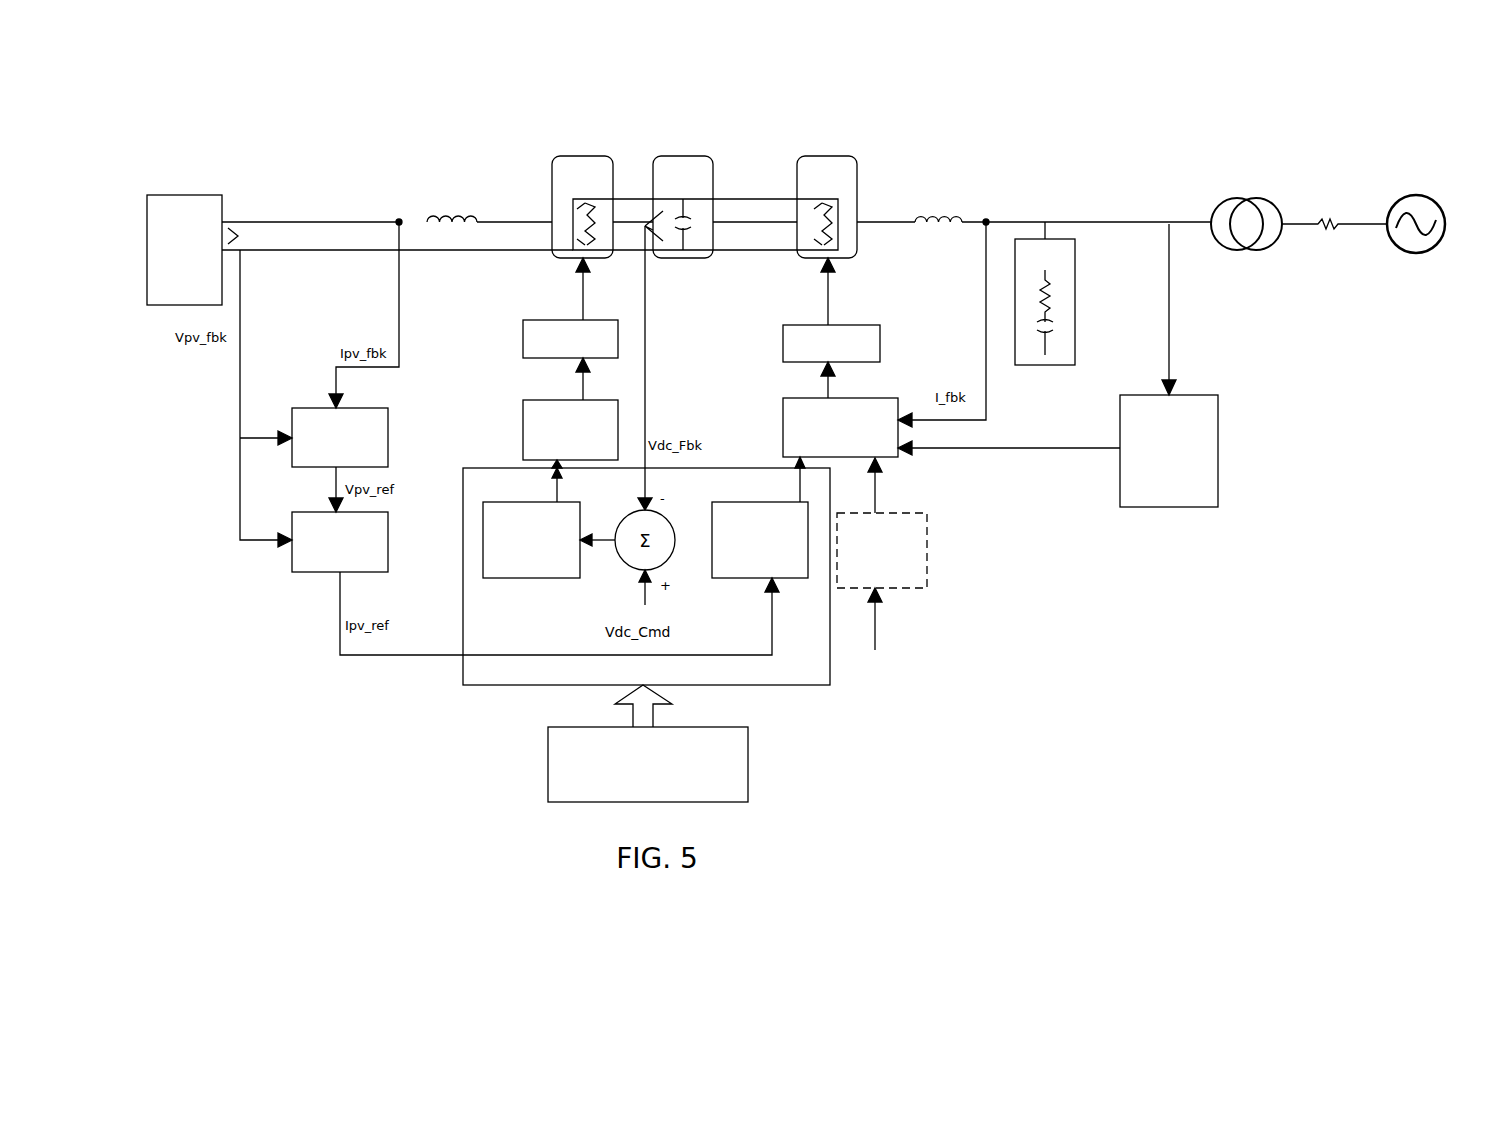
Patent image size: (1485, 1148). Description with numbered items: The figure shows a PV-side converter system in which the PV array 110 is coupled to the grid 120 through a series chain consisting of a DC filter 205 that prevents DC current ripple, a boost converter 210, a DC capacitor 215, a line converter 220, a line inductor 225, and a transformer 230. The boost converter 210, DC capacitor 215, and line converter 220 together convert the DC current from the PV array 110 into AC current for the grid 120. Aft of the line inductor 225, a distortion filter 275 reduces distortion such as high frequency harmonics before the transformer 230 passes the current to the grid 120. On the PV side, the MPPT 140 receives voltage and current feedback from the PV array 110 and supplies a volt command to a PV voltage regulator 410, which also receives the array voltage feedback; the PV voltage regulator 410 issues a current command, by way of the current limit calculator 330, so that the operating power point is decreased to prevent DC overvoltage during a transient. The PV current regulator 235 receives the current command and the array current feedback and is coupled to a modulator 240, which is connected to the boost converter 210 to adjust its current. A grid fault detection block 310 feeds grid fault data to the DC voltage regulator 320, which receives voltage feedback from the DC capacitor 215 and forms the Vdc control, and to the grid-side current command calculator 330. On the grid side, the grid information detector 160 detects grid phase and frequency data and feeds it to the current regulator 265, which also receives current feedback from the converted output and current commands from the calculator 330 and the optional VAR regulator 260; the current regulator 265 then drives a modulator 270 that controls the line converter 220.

The PV array 110 is at (192, 250).
The grid 120 is at (1416, 209).
The MPPT 140 is at (340, 437).
The grid information detector 160 is at (1058, 365).
The DC filter 205 is at (452, 203).
The boost converter 210 is at (582, 207).
The DC capacitor 215 is at (679, 207).
The line converter 220 is at (827, 207).
The line inductor 225 is at (938, 203).
The transformer 230 is at (1246, 210).
The PV current regulator 235 is at (570, 409).
The modulator 240 is at (570, 308).
The VAR regulator 260 is at (882, 564).
The current regulator 265 is at (840, 409).
The inverter gate driver 270 is at (831, 310).
The distortion filter 275 is at (1045, 293).
The grid fault detection block 310 is at (646, 635).
The DC voltage regulator 320 is at (531, 519).
The grid-side current command calculator 330 is at (760, 517).
The PV voltage regulator 410 is at (340, 542).